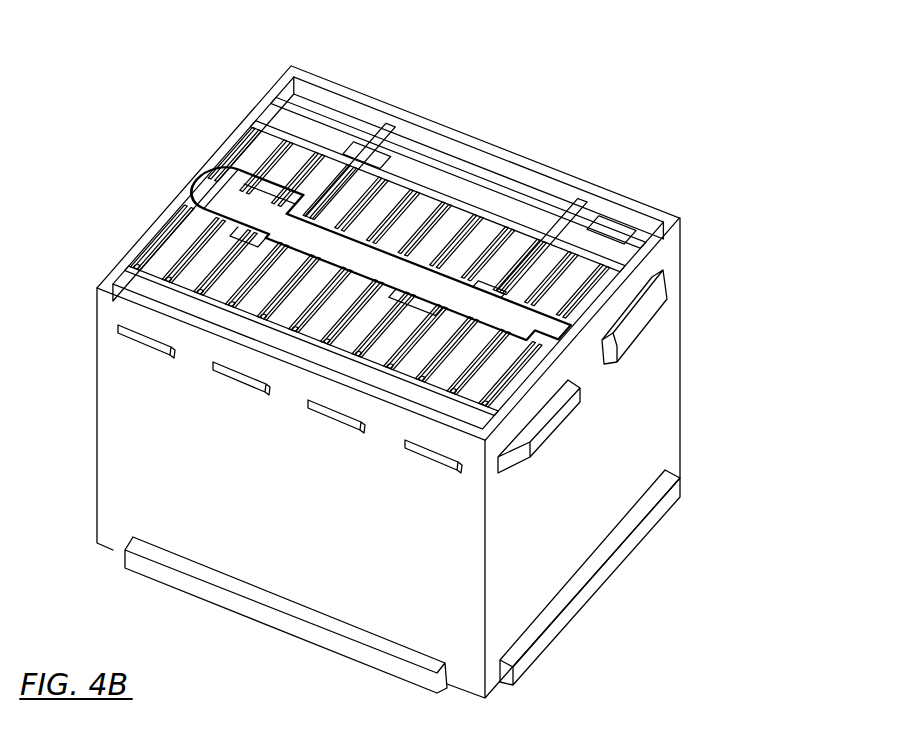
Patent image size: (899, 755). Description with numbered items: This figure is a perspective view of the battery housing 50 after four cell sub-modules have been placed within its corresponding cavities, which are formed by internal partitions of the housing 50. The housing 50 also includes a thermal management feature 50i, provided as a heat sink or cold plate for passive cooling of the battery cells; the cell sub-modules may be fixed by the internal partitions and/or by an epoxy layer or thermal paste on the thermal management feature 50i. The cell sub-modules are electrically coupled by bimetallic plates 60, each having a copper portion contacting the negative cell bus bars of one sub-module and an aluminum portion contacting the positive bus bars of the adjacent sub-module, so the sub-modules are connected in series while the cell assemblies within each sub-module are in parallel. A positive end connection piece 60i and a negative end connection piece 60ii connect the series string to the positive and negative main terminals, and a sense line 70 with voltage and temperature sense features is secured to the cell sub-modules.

The housing 50 is at (108, 435).
The thermal management feature 50i is at (556, 647).
The bimetallic plate 60 is at (219, 311).
The positive end connection piece 60i is at (367, 155).
The negative end connection piece 60ii is at (612, 232).
The sense line 70 is at (520, 328).